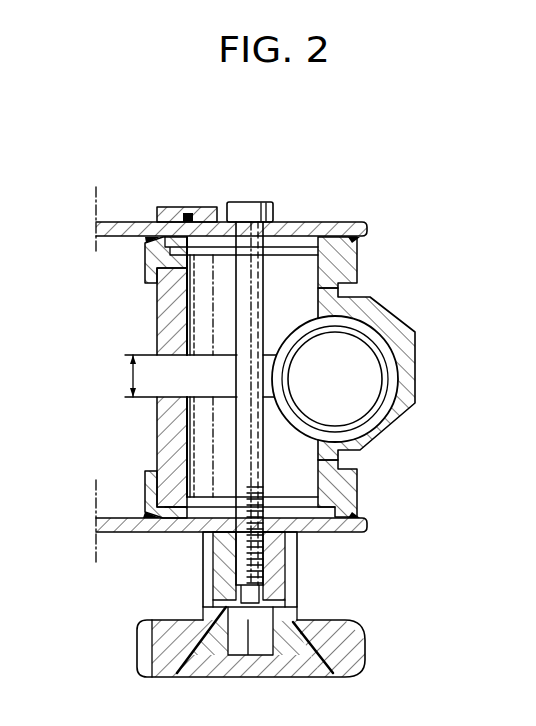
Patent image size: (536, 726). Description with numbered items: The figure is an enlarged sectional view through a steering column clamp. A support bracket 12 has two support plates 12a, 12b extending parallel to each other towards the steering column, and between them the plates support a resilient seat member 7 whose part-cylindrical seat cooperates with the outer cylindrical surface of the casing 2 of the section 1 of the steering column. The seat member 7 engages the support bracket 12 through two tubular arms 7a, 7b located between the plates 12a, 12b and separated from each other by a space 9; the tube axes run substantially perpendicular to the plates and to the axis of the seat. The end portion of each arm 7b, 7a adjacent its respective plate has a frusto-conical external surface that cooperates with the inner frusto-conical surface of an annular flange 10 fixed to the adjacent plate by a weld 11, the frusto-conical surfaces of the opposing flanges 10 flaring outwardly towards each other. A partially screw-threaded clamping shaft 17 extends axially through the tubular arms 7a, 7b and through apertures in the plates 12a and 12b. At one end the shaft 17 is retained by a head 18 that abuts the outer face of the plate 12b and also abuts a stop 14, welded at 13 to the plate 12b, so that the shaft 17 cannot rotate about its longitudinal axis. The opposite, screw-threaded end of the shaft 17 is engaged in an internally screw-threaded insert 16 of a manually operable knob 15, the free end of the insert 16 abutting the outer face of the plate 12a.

The section of the steering column 1 is at (352, 385).
The casing 2 is at (392, 392).
The resilient seat member 7 is at (281, 372).
The arm 7a is at (170, 320).
The arm 7b is at (165, 428).
The space 9 is at (133, 375).
The annular flange 10 is at (357, 262).
The weld 11 is at (358, 238).
The support bracket 12 is at (348, 214).
The support plate 12a is at (368, 528).
The support plate 12b is at (145, 238).
The weld 13 is at (187, 212).
The stop 14 is at (165, 208).
The manually operable knob 15 is at (360, 665).
The internally screw-threaded insert 16 is at (227, 562).
The clamping shaft 17 is at (235, 375).
The head 18 is at (263, 202).